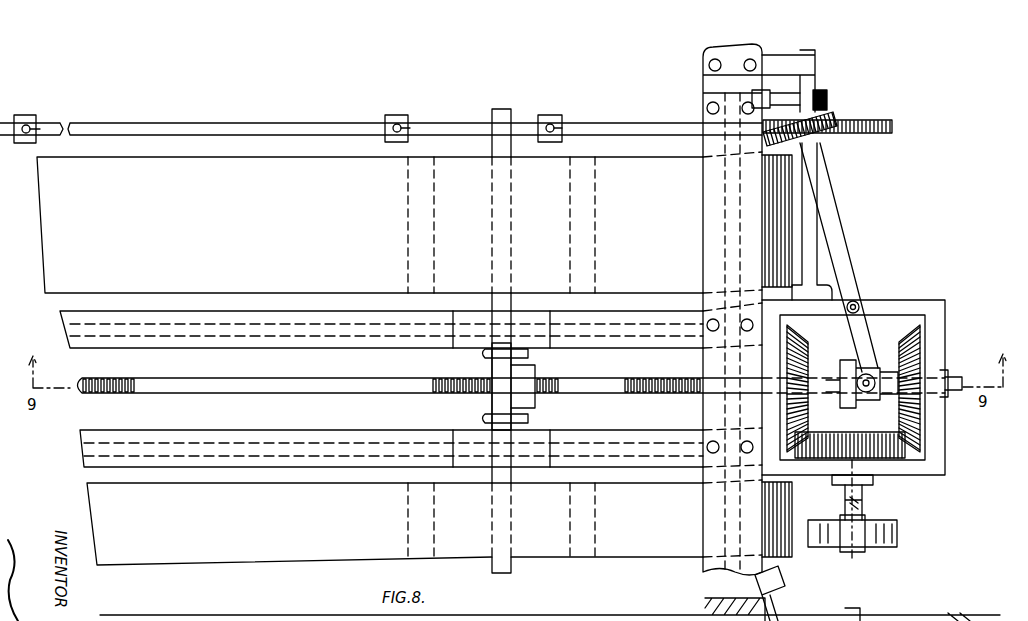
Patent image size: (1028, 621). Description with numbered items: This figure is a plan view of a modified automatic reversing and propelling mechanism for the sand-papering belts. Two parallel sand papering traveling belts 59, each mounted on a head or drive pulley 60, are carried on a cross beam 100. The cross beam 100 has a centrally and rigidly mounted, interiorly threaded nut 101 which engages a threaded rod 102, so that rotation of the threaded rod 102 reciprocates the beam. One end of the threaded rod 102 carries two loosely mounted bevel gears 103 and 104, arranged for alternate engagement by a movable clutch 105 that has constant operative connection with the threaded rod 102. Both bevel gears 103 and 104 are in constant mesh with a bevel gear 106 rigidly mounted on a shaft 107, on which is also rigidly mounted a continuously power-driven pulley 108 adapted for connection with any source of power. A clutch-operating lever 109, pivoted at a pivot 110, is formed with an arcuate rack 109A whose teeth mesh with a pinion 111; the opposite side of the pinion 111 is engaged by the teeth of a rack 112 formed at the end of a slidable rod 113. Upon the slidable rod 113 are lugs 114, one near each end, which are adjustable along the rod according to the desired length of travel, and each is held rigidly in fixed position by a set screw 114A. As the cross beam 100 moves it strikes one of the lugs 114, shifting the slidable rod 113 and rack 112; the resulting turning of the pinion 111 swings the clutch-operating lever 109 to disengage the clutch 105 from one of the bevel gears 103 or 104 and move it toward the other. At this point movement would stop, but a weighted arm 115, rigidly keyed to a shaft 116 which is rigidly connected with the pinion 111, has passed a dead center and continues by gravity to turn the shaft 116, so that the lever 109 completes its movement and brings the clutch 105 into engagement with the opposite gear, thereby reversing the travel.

The sand papering traveling belt 59 is at (258, 168).
The head or drive pulley 60 is at (676, 172).
The cross beam 100 is at (492, 222).
The nut 101 is at (537, 405).
The threaded rod 102 is at (390, 390).
The bevel gear 103 is at (808, 360).
The bevel gear 104 is at (920, 342).
The movable clutch 105 is at (866, 400).
The bevel gear 106 is at (880, 462).
The shaft 107 is at (862, 502).
The continuously power-driven pulley 108 is at (897, 538).
The clutch-operating lever 109 is at (836, 229).
The arcuate rack 109A is at (805, 140).
The pivot 110 is at (859, 304).
The pinion 111 is at (827, 114).
The rack 112 is at (892, 125).
The slidable rod 113 is at (612, 127).
The lug 114 is at (30, 117).
The set screw 114A is at (44, 128).
The weighted arm 115 is at (765, 95).
The shaft 116 is at (812, 86).